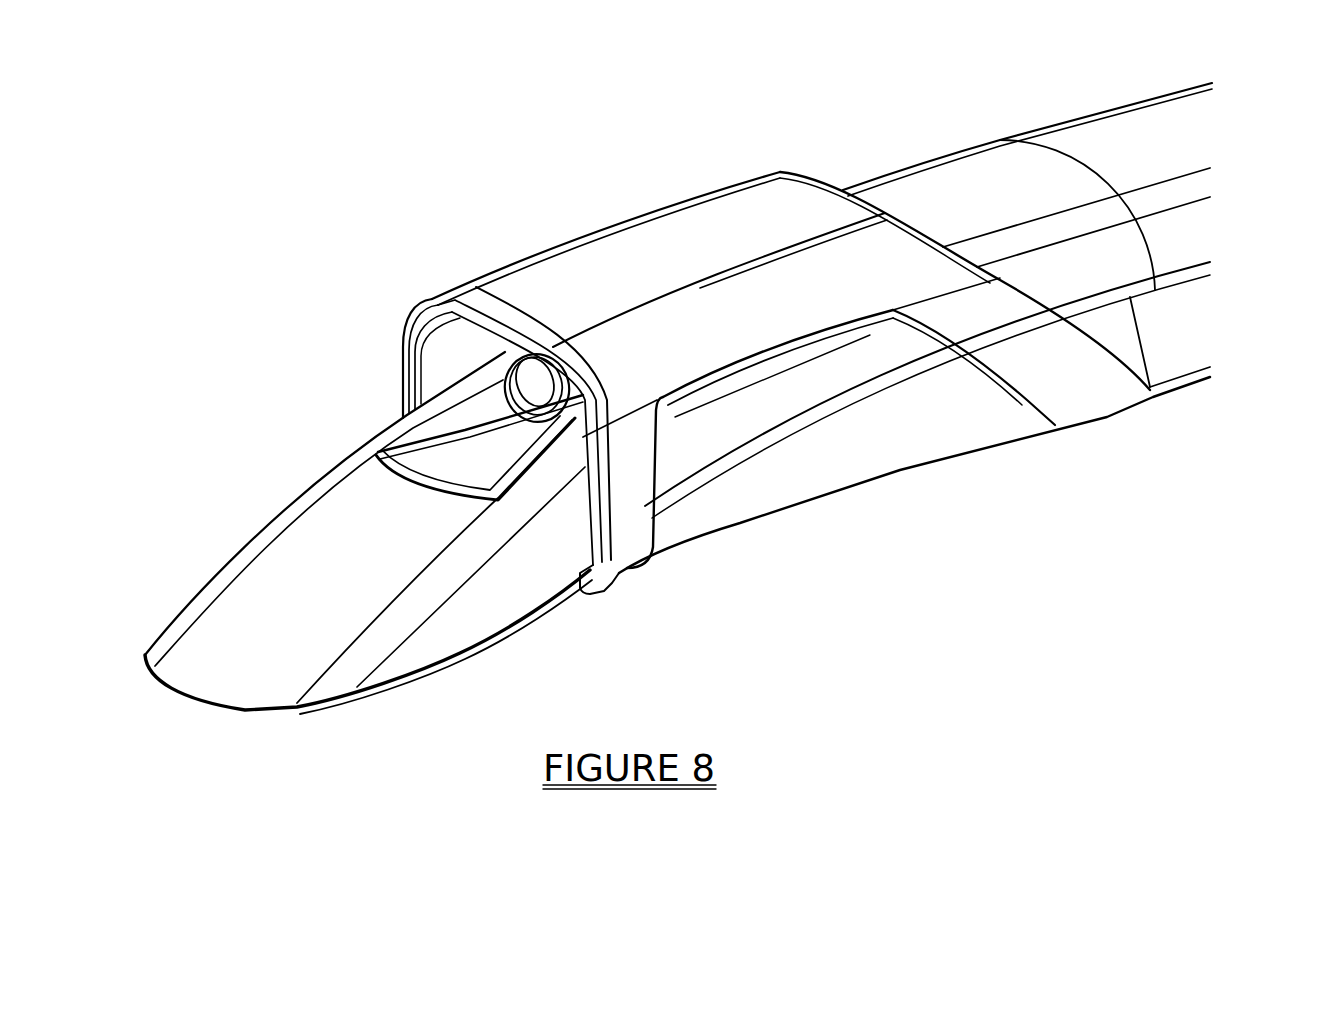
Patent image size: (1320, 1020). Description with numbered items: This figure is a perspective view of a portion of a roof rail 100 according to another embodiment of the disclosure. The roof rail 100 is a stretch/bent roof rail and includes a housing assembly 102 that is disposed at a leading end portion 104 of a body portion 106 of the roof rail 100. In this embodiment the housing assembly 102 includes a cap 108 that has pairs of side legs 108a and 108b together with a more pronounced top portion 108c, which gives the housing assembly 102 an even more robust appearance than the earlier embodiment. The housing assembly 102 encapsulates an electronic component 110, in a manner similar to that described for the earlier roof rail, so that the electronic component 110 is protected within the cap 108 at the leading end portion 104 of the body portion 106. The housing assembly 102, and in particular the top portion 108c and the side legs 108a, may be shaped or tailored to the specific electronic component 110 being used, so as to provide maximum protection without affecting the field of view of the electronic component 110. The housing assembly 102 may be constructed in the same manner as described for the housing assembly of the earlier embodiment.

The roof rail 100 is at (431, 199).
The housing assembly 102 is at (400, 334).
The leading end portion 104 is at (281, 584).
The body portion 106 is at (1181, 364).
The cap 108 is at (690, 245).
The side legs 108a is at (432, 393).
The side legs 108b is at (1005, 320).
The top portion 108c is at (557, 277).
The electronic component 110 is at (516, 379).